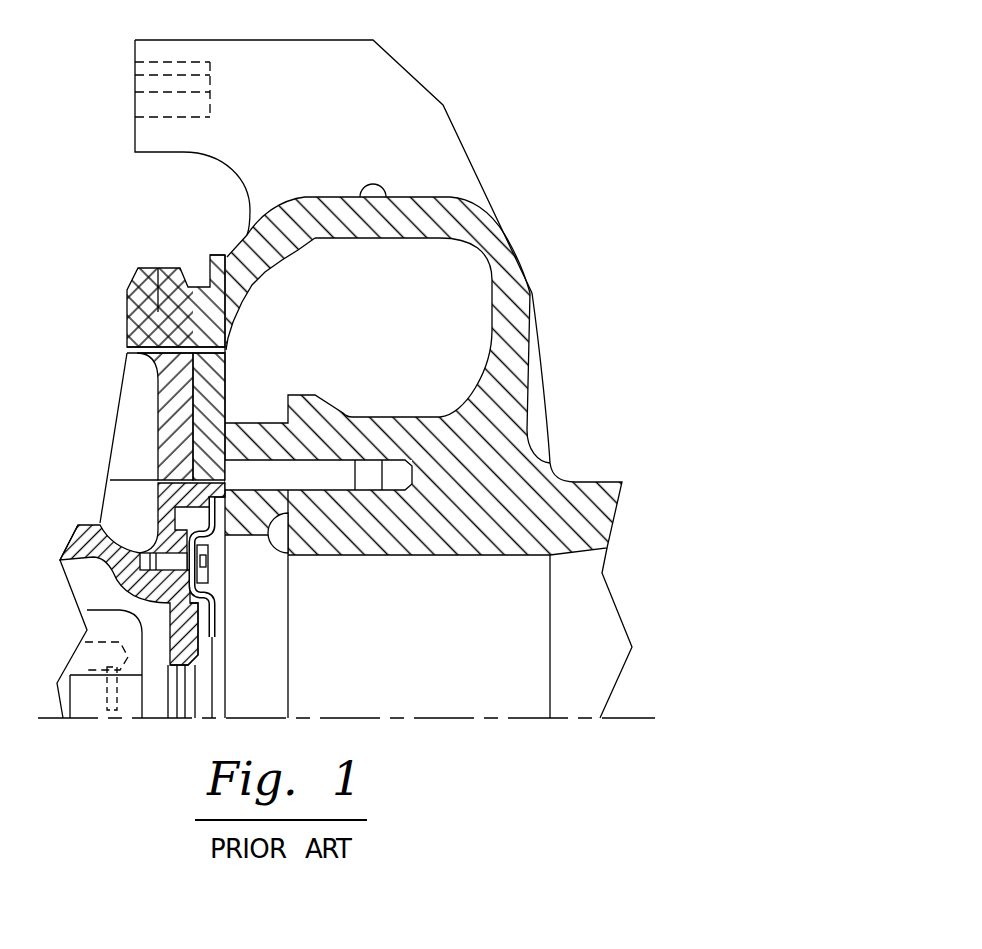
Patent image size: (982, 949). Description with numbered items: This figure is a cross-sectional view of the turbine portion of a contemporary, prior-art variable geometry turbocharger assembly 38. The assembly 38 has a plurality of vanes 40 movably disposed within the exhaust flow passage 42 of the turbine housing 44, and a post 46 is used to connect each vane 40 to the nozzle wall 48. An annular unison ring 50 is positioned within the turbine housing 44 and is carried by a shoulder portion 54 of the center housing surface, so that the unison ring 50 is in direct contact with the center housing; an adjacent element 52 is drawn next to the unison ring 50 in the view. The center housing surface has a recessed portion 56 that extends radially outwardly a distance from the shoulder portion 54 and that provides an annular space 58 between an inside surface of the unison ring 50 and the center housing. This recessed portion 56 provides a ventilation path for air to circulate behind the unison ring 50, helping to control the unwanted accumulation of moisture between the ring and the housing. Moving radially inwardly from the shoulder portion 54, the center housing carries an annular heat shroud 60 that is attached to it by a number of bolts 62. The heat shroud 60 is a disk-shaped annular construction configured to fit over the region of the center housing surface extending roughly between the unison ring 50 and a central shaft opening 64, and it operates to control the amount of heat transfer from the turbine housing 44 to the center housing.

The variable geometry turbocharger assembly 38 is at (532, 172).
The vanes 40 is at (267, 432).
The exhaust flow passage 42 is at (261, 368).
The turbine housing 44 is at (520, 385).
The post 46 is at (322, 482).
The nozzle wall 48 is at (270, 537).
The unison ring 50 is at (162, 322).
The washer 52 is at (143, 338).
The shoulder portion 54 is at (175, 495).
The recessed portion 56 is at (182, 452).
The annular space 58 is at (187, 405).
The heat shroud 60 is at (213, 637).
The bolts 62 is at (210, 562).
The central shaft opening 64 is at (198, 660).